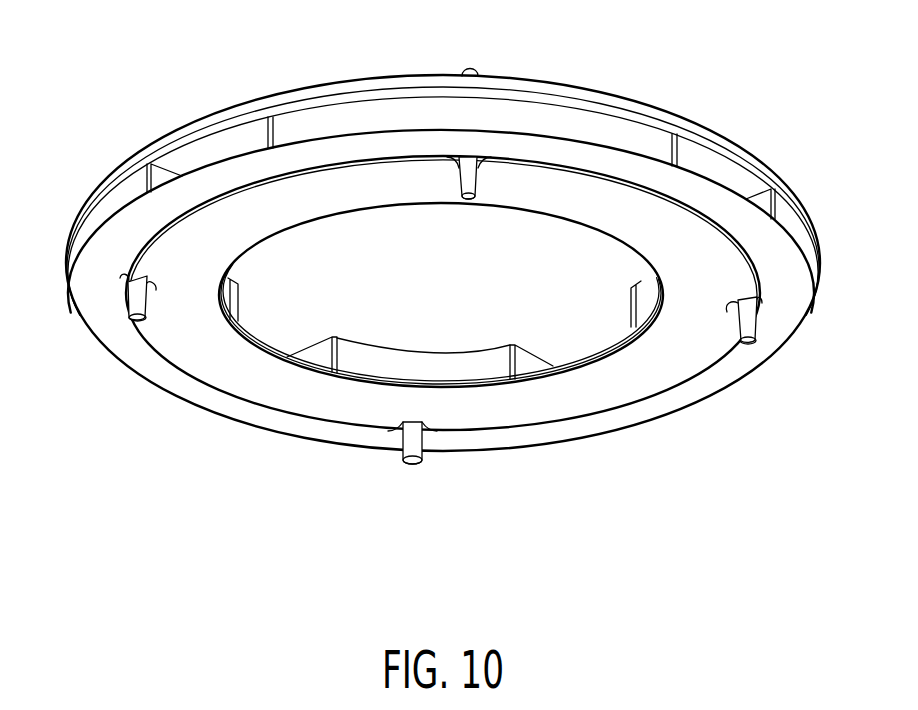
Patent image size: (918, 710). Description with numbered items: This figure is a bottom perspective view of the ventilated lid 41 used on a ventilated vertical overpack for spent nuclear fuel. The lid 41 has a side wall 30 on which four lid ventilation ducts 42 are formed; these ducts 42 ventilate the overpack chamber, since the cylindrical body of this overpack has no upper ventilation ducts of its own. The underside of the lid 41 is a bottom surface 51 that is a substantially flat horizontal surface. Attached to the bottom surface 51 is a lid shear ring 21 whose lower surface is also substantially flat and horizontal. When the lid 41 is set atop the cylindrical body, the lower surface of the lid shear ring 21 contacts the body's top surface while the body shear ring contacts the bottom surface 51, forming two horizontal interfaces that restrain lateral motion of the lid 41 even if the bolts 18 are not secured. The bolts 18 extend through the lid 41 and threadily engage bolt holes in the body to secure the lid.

The bolts 18 is at (474, 66).
The lid shear ring 21 is at (591, 197).
The side wall 30 is at (396, 108).
The ventilated lid 41 is at (207, 485).
The lid ventilation ducts 42 is at (222, 140).
The bottom surface 51 is at (110, 237).